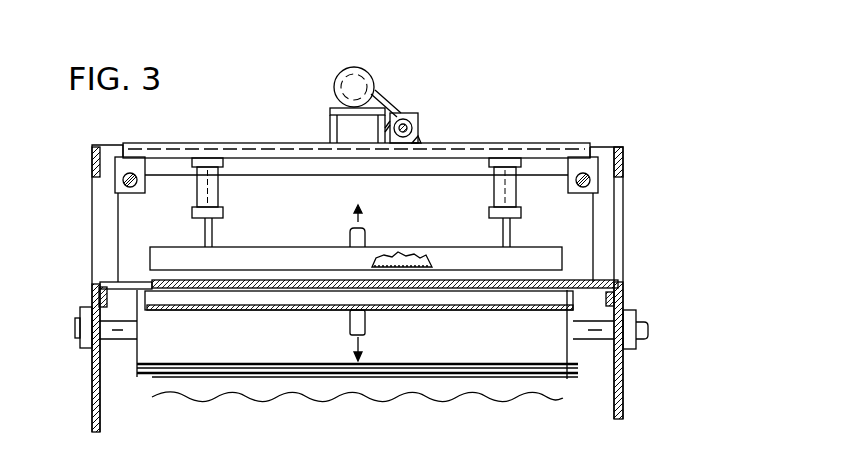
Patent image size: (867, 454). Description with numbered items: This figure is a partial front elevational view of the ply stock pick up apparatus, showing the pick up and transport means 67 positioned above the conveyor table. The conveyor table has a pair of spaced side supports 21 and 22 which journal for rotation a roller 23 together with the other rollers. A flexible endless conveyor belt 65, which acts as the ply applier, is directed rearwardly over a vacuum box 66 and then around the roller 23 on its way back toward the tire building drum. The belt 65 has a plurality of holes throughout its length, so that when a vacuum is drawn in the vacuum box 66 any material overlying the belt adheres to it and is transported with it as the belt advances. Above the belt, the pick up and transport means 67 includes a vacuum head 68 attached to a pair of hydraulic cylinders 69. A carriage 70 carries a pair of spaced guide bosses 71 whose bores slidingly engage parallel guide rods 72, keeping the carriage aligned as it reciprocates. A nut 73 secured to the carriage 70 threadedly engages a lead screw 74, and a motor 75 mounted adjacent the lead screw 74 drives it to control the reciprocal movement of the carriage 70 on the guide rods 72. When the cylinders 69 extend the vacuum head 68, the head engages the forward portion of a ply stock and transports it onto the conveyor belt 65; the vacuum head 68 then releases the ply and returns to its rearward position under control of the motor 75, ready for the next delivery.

The side support 21 is at (92, 402).
The side support 22 is at (625, 385).
The roller 23 is at (244, 355).
The conveyor belt 65 is at (527, 283).
The vacuum box 66 is at (502, 299).
The pick up and transport means 67 is at (528, 47).
The vacuum head 68 is at (296, 250).
The hydraulic cylinders 69 is at (199, 197).
The carriage 70 is at (501, 143).
The guide bosses 71 is at (133, 165).
The guide rods 72 is at (123, 182).
The nut 73 is at (421, 140).
The lead screw 74 is at (404, 113).
The motor 75 is at (365, 67).